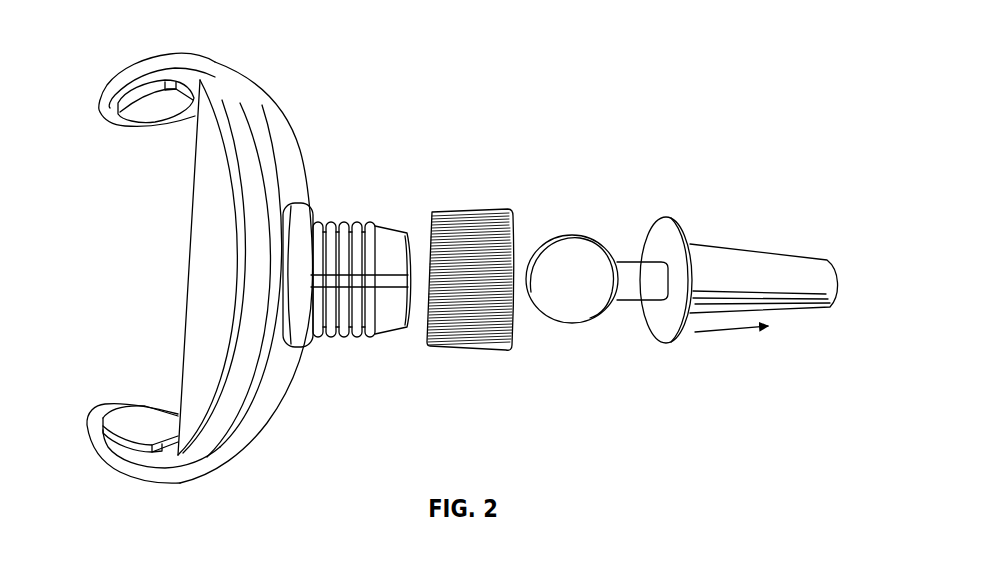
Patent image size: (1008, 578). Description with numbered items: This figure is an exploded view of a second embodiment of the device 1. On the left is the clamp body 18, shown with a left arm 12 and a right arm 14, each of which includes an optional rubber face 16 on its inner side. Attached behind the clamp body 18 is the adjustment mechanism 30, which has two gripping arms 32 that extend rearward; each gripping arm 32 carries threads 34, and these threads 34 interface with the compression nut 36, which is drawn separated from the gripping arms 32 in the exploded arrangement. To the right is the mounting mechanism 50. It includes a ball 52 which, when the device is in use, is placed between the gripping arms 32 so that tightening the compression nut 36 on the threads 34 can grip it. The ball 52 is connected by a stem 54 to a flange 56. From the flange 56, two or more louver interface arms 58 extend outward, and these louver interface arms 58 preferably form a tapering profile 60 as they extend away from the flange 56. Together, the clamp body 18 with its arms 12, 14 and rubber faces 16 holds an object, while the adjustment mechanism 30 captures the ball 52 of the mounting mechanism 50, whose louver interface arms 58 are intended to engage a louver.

The mounting device 1 is at (522, 80).
The left arm 12 is at (145, 60).
The right arm 14 is at (133, 470).
The rubber face 16 is at (153, 115).
The clamp body 18 is at (221, 281).
The adjustment mechanism 30 is at (512, 158).
The gripping arms 32 is at (392, 225).
The threads 34 is at (337, 218).
The compression nut 36 is at (472, 340).
The mounting mechanism 50 is at (714, 163).
The ball 52 is at (557, 312).
The stem 54 is at (628, 290).
The flange 56 is at (657, 236).
The louver interface arms 58 is at (786, 246).
The tapering profile 60 is at (784, 337).